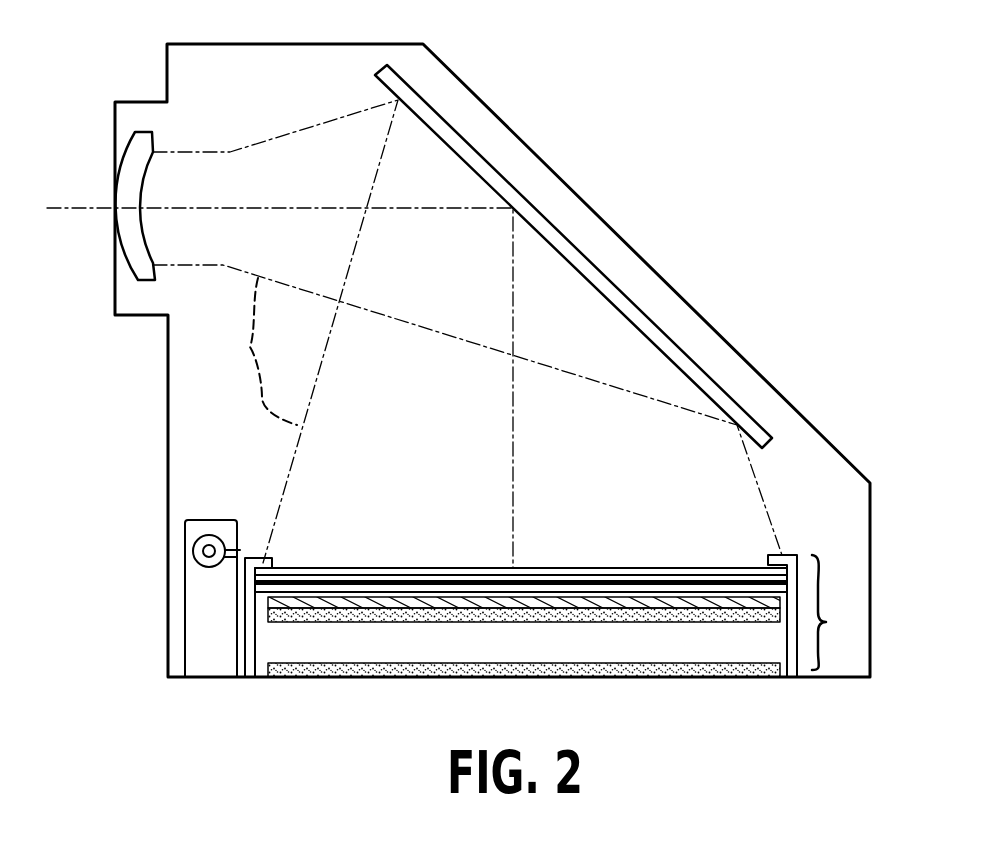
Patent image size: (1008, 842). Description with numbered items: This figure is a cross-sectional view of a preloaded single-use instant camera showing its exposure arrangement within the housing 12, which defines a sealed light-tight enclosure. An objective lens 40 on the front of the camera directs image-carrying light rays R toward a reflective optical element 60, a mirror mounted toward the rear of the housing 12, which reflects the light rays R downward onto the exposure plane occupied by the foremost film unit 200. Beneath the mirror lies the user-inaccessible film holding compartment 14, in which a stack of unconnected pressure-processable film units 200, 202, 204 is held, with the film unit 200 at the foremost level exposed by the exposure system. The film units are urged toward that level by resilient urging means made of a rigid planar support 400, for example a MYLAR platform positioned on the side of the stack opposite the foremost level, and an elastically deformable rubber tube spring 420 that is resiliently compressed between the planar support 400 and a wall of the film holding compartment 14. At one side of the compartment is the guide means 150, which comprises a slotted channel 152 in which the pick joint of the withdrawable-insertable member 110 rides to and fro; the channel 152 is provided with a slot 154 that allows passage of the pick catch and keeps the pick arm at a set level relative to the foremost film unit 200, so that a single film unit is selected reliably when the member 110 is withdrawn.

The housing 12 is at (870, 547).
The film holding compartment 14 is at (811, 616).
The objective lens 40 is at (132, 252).
The reflective optical element 60 is at (617, 287).
The withdrawable-insertable member 110 is at (203, 553).
The guide means 150 is at (185, 643).
The channel 152 is at (208, 570).
The slot 154 is at (258, 543).
The film unit 200 is at (538, 568).
The film unit 202 is at (595, 580).
The film unit 204 is at (675, 592).
The planar support 400 is at (625, 605).
The rubber tube spring 420 is at (368, 622).
The light rays R is at (260, 351).